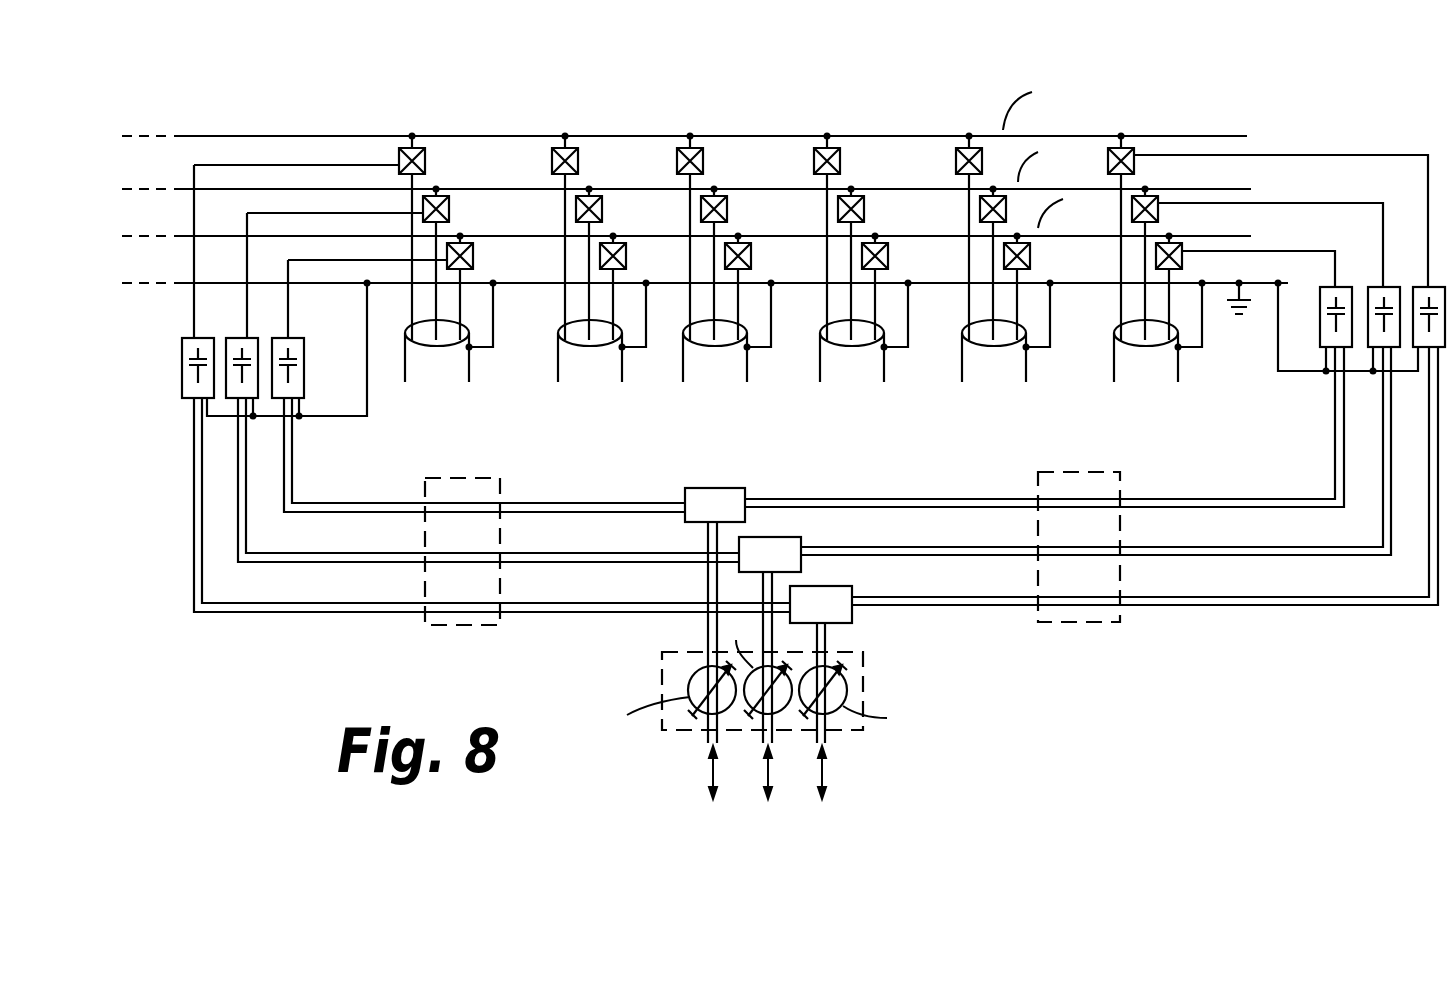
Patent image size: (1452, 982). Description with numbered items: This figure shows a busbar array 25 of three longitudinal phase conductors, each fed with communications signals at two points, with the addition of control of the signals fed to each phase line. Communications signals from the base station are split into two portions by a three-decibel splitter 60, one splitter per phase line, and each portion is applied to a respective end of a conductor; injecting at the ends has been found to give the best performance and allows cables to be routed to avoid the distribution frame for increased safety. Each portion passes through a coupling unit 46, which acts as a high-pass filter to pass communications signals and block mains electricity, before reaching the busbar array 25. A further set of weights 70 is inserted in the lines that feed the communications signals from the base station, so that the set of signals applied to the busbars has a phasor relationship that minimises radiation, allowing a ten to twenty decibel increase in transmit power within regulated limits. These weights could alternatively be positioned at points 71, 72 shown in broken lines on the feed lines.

The busbar array 25 is at (627, 120).
The coupling unit 46 is at (192, 388).
The 3 dB splitter 60 is at (737, 493).
The weights 70 is at (862, 668).
The alternative weight position 71 is at (443, 618).
The alternative weight position 72 is at (1098, 617).